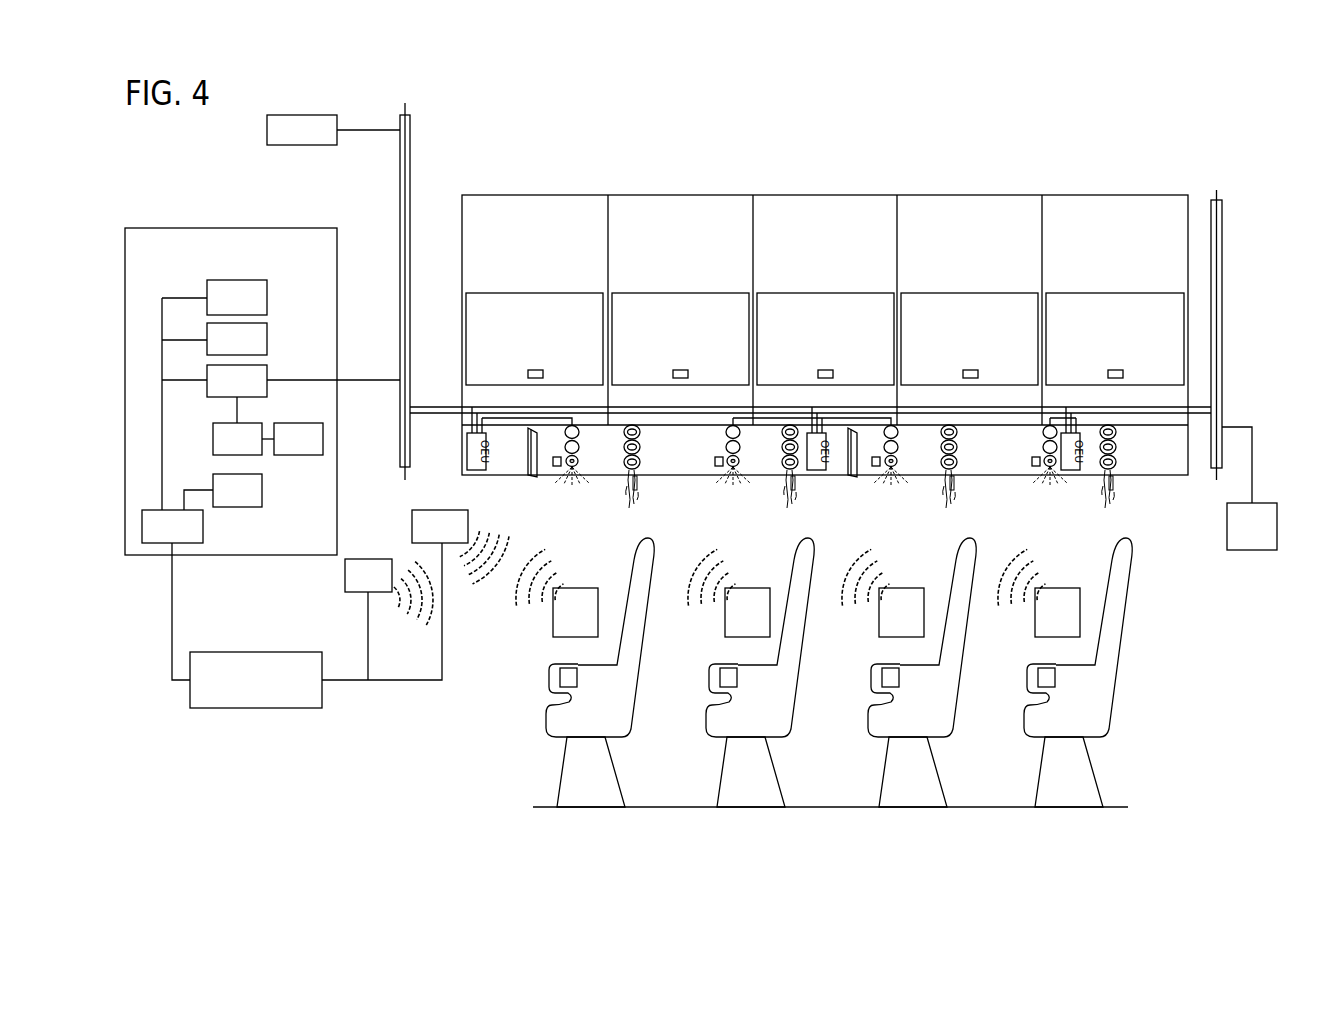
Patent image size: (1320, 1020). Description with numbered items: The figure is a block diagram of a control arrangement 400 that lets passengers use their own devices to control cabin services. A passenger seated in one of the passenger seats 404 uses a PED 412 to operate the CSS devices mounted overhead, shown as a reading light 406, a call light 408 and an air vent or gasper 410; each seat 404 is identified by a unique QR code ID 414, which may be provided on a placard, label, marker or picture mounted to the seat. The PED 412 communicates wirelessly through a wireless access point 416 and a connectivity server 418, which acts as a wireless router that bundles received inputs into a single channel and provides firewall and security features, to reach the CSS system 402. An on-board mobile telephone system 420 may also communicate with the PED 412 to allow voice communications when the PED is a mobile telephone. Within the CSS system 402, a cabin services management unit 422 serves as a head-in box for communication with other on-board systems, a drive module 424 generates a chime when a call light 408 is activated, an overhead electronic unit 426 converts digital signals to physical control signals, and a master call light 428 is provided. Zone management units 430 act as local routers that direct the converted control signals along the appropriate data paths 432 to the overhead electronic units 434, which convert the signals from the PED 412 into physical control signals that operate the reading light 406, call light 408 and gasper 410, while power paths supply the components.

The control arrangement 400 is at (797, 131).
The CSS system 402 is at (182, 228).
The passenger seat 404 is at (603, 718).
The reading light (RL) 406 is at (579, 463).
The call light (CL) 408 is at (553, 468).
The air vent (Gasper) 410 is at (640, 448).
The PED 412 is at (563, 633).
The QR code ID 414 is at (555, 676).
The wireless access point (WAP) 416 is at (344, 577).
The connectivity server 418 is at (277, 708).
The on-board mobile telephone system (OMTS) 420 is at (411, 527).
The cabin services management unit (CSMU) 422 is at (203, 533).
The drive module (SDM) 424 is at (262, 490).
The overhead electronic unit (OEU) 426 is at (213, 439).
The master call light (MLC) 428 is at (323, 439).
The zone management unit (ZMU) 430 is at (267, 293).
The data path 432 is at (418, 407).
The overhead electronic unit (OEU) 434 is at (477, 470).